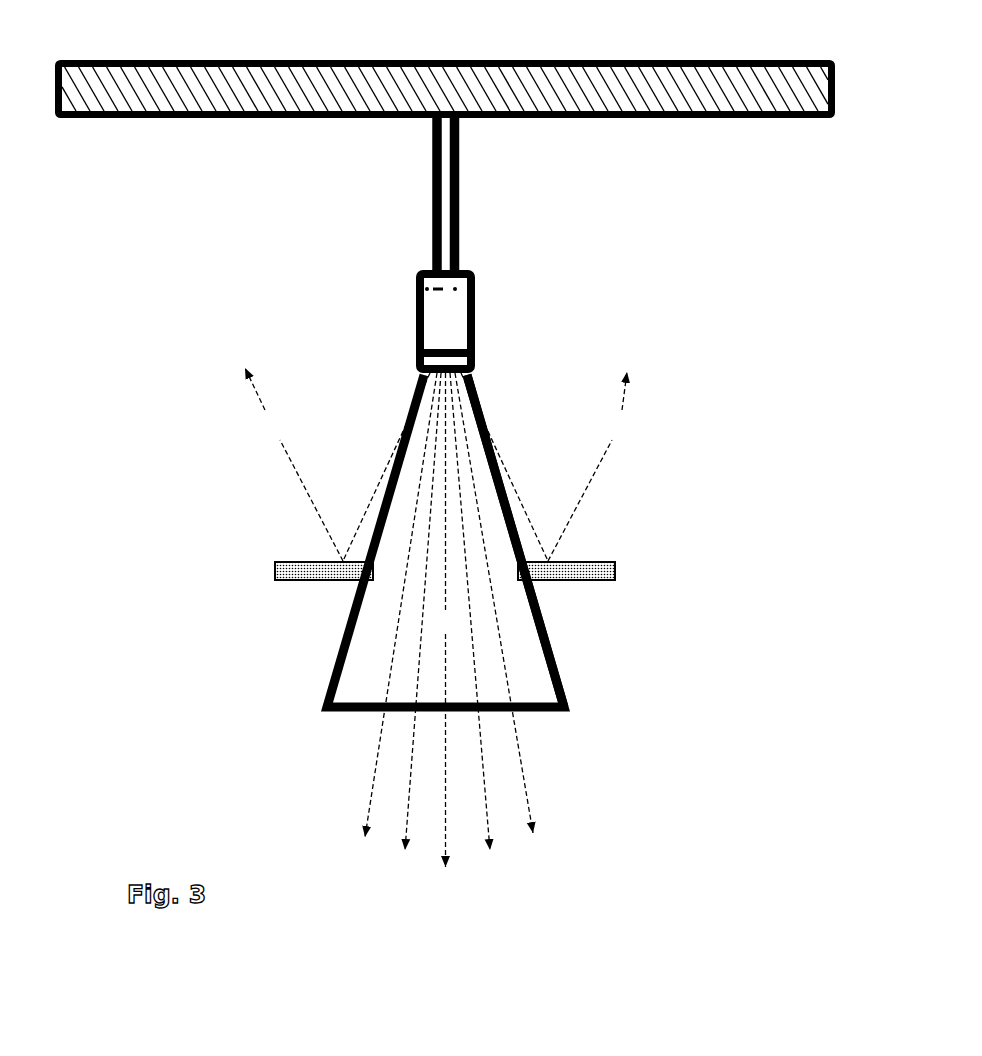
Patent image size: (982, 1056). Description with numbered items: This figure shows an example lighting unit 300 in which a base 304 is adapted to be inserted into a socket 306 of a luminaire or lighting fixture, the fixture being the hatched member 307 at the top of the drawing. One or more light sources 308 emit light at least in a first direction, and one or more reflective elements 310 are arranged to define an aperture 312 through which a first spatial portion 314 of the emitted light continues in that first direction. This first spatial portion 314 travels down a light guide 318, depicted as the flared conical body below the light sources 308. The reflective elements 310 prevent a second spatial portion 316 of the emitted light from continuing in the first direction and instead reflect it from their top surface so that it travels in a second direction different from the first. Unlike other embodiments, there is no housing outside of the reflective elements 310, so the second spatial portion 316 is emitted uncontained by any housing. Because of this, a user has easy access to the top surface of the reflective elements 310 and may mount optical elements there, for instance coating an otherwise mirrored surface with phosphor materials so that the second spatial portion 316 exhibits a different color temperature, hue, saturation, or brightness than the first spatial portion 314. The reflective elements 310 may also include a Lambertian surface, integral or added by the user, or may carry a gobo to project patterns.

The lighting unit 300 is at (130, 370).
The base 304 is at (452, 306).
The socket 306 is at (413, 317).
The ceiling / mounting surface 307 is at (566, 118).
The light sources 308 is at (453, 348).
The reflective elements 310 is at (325, 560).
The aperture 312 is at (374, 573).
The first spatial portion 314 is at (537, 674).
The second spatial portion 316 is at (325, 383).
The light guide 318 is at (333, 660).